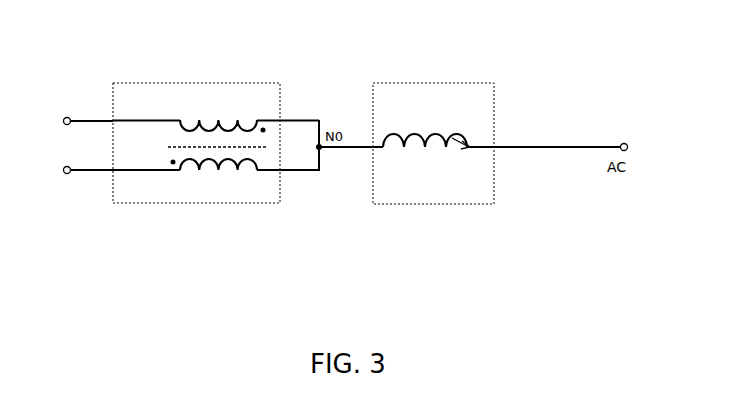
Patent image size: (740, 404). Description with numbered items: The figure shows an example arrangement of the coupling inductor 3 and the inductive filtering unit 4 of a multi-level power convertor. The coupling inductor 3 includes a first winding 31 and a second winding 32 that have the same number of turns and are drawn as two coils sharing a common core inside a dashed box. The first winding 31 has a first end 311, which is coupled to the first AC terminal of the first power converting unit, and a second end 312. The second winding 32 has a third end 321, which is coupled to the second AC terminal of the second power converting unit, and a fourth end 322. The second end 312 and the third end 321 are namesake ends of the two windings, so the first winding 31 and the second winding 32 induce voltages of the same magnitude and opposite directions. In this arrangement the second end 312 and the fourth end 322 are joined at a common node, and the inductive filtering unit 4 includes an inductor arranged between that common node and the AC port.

The coupling inductor 3 is at (199, 142).
The first winding 31 is at (200, 119).
The first end 311 is at (181, 119).
The second end 312 is at (257, 119).
The second winding 32 is at (207, 172).
The third end 321 is at (183, 172).
The fourth end 322 is at (260, 172).
The inductive filtering unit 4 is at (416, 83).